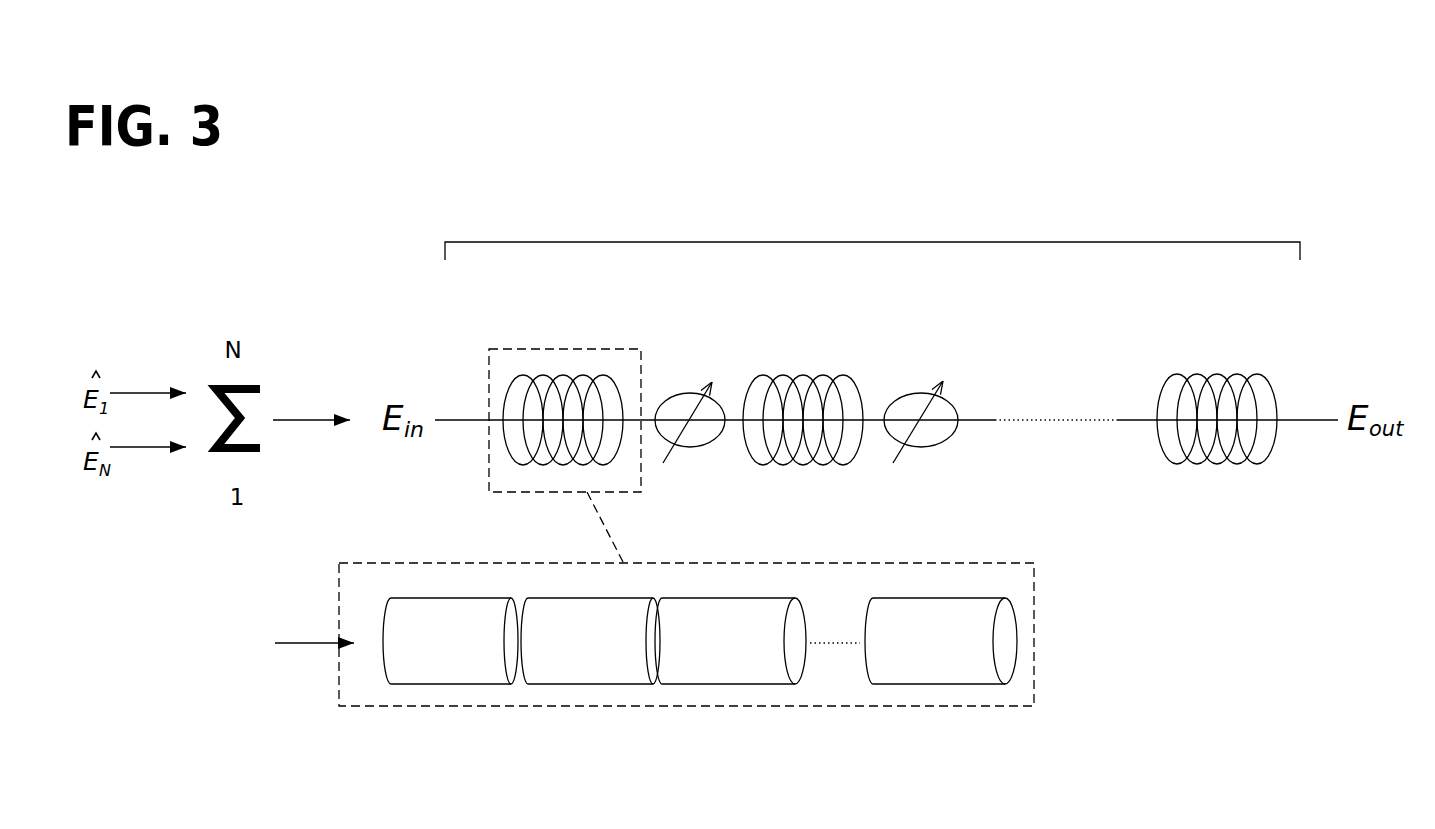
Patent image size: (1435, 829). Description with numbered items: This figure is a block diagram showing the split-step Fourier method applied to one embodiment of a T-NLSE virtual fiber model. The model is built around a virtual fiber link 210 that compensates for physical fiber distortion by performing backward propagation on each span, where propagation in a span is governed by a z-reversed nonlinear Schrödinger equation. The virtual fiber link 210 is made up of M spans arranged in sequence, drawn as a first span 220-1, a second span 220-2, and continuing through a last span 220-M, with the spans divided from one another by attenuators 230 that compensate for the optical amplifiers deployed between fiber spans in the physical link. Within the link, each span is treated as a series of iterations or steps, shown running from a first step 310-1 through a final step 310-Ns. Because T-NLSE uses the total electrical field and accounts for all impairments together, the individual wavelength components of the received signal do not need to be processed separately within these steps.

The virtual fiber link 210 is at (944, 242).
The span 220-1 is at (675, 573).
The span 220-2 is at (797, 499).
The span 220-M is at (1225, 504).
The attenuators 230 is at (690, 340).
The step 310-1 is at (440, 685).
The step 310-Ns is at (935, 685).